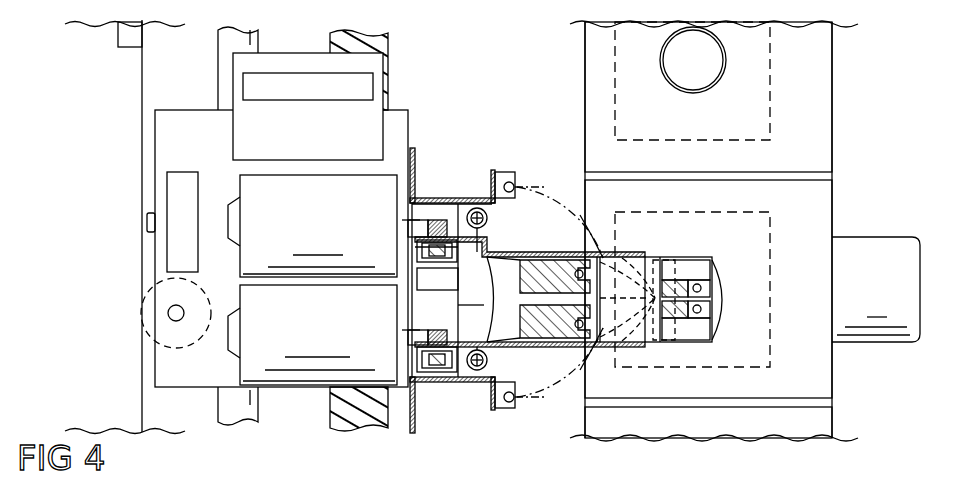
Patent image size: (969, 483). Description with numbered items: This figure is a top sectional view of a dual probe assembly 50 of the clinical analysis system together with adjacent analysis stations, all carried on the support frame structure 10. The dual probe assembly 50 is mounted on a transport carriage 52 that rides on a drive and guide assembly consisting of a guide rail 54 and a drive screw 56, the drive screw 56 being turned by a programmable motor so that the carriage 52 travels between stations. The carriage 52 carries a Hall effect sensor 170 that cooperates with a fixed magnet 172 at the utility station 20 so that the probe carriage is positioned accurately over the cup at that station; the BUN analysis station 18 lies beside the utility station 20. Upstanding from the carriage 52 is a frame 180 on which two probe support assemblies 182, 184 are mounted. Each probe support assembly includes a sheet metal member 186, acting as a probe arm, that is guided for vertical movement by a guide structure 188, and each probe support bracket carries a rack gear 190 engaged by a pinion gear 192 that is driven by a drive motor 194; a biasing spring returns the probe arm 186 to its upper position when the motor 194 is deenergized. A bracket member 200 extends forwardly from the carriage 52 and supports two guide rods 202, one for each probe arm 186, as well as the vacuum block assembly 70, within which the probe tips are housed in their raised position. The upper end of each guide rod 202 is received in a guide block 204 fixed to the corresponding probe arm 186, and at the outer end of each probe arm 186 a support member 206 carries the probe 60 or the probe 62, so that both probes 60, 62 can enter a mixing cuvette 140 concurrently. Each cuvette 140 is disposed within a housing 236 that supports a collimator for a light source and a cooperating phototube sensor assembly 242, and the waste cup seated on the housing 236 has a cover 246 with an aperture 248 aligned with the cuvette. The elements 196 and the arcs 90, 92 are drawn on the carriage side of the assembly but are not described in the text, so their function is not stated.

The support frame structure 10 is at (146, 403).
The BUN analysis station 18 is at (852, 213).
The utility station 20 is at (842, 70).
The dual probe assembly 50 is at (470, 118).
The transport carriage 52 is at (180, 107).
The guide rail 54 is at (259, 42).
The drive screw 56 is at (389, 43).
The probe 60 is at (712, 307).
The probe 62 is at (712, 286).
The vacuum block assembly 70 is at (648, 300).
The lower path 90 is at (543, 400).
The upper path 92 is at (580, 215).
The mixing cuvette 140 is at (710, 78).
The Hall effect sensor 170 is at (147, 220).
The fixed magnet 172 is at (125, 38).
The frame 180 is at (499, 168).
The probe support assembly 182 is at (705, 313).
The probe support assembly 184 is at (705, 284).
The sheet metal member 186 is at (613, 255).
The guide structure 188 is at (427, 260).
The rack gear 190 is at (436, 220).
The pinion gear 192 is at (443, 250).
The drive motor 194 is at (312, 192).
The screw 196 is at (488, 216).
The bracket member 200 is at (655, 272).
The guide rod 202 is at (575, 270).
The guide block 204 is at (525, 273).
The support member 206 is at (700, 263).
The housing 236 is at (771, 123).
The phototube sensor assembly 242 is at (882, 242).
The cover 246 is at (833, 120).
The aperture 248 is at (712, 43).